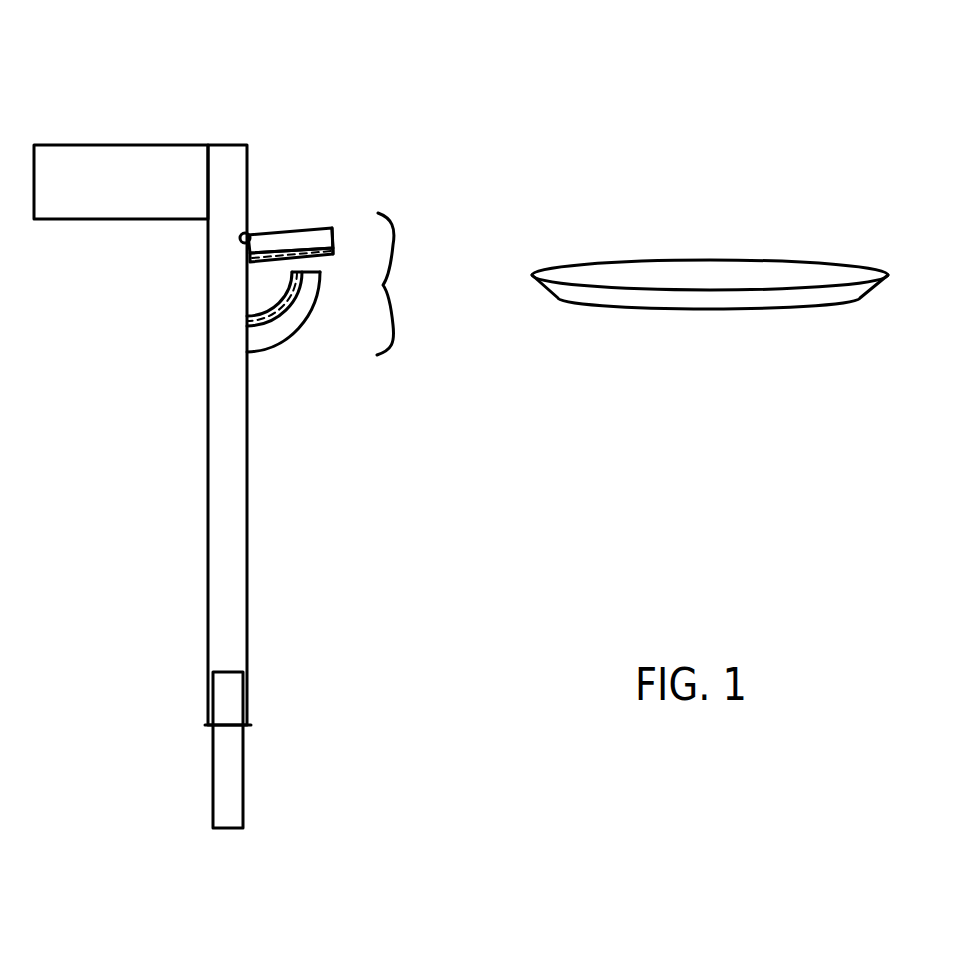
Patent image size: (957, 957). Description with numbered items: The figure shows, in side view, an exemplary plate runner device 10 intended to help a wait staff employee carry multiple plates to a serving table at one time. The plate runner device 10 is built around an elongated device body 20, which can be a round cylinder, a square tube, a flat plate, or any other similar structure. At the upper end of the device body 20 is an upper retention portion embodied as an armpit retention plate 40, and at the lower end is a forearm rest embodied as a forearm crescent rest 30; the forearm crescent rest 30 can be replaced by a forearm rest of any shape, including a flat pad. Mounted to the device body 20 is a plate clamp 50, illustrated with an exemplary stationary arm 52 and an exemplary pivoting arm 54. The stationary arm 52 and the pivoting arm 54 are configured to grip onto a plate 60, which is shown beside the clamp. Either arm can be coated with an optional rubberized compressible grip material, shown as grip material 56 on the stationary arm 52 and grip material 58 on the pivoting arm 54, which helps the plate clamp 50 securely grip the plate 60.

The plate runner device 10 is at (378, 55).
The elongated device body 20 is at (205, 387).
The forearm crescent rest 30 is at (250, 767).
The armpit retention plate 40 is at (122, 137).
The plate clamp 50 is at (275, 295).
The stationary arm 52 is at (287, 347).
The pivoting arm 54 is at (287, 223).
The rubberized compressible grip material 56 is at (297, 278).
The rubberized compressible grip material 58 is at (335, 243).
The plate 60 is at (612, 253).